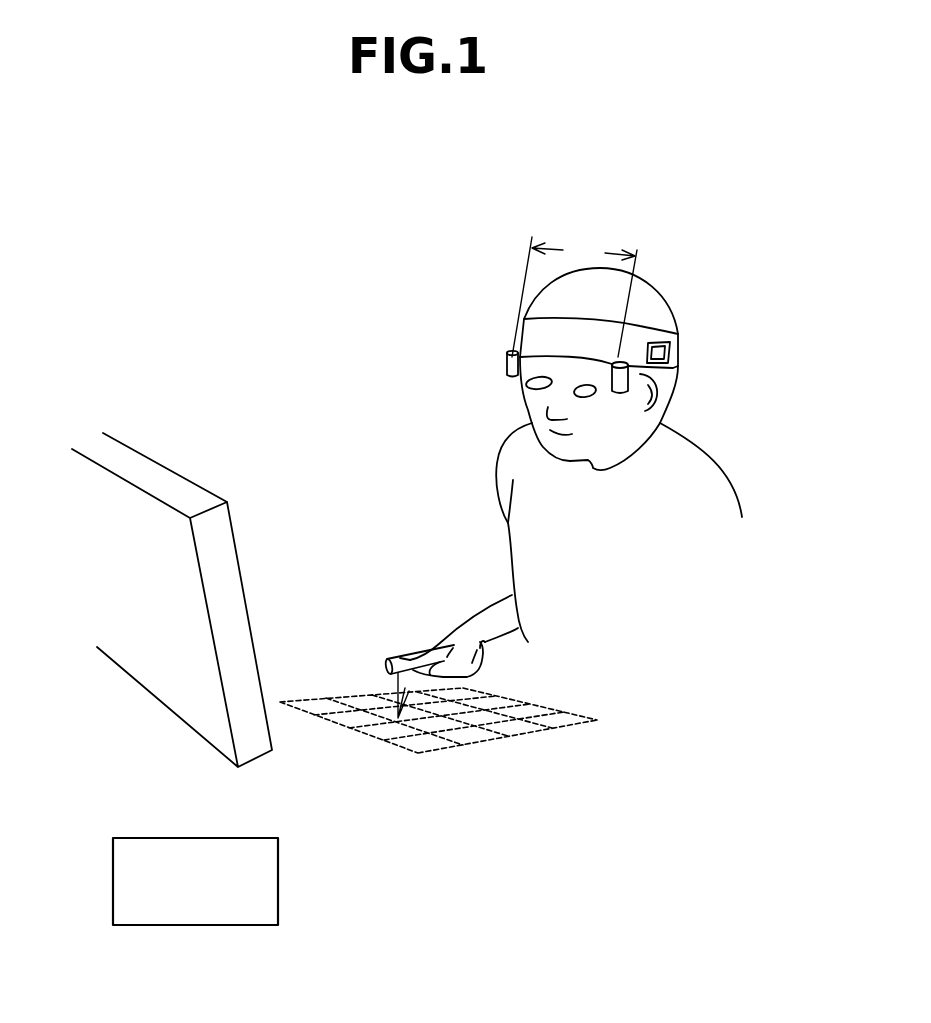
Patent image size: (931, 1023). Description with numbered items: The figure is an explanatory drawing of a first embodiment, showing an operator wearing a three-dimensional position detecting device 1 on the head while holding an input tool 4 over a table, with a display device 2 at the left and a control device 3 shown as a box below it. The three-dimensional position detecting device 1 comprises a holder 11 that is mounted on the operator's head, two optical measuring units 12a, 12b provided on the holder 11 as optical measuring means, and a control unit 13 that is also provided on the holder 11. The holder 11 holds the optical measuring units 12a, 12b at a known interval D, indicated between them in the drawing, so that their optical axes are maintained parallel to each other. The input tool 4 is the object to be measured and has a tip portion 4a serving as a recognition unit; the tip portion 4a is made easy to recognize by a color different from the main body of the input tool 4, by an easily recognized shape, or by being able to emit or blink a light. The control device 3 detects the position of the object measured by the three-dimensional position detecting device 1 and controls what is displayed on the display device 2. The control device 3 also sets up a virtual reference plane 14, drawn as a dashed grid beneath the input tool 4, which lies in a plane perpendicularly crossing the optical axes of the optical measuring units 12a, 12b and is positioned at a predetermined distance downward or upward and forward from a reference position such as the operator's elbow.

The three-dimensional position detecting device 1 is at (595, 299).
The display device 2 is at (162, 465).
The control device 3 is at (278, 870).
The input tool 4 is at (387, 630).
The tip portion 4a is at (397, 668).
The holder 11 is at (640, 327).
The optical measuring unit 12a is at (507, 365).
The optical measuring unit 12b is at (667, 402).
The control unit 13 is at (658, 343).
The virtual reference plane 14 is at (573, 713).